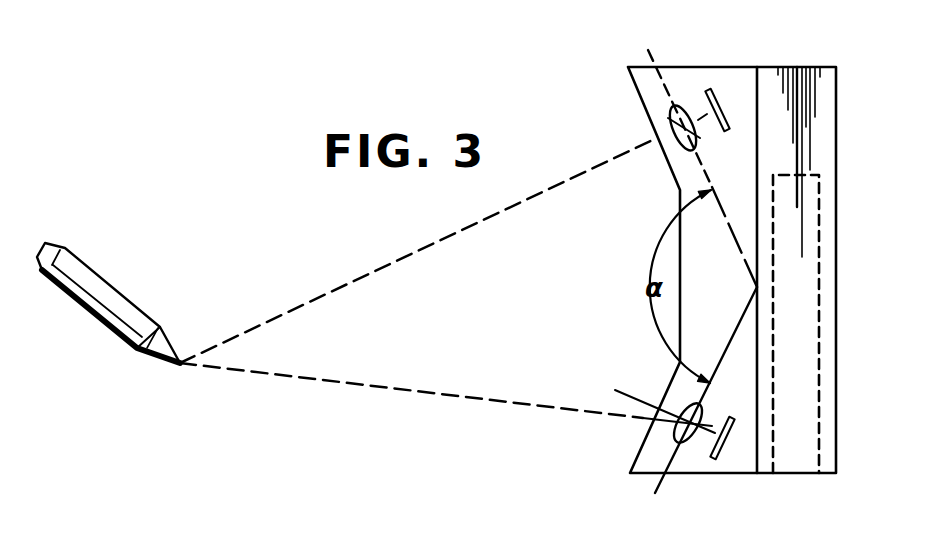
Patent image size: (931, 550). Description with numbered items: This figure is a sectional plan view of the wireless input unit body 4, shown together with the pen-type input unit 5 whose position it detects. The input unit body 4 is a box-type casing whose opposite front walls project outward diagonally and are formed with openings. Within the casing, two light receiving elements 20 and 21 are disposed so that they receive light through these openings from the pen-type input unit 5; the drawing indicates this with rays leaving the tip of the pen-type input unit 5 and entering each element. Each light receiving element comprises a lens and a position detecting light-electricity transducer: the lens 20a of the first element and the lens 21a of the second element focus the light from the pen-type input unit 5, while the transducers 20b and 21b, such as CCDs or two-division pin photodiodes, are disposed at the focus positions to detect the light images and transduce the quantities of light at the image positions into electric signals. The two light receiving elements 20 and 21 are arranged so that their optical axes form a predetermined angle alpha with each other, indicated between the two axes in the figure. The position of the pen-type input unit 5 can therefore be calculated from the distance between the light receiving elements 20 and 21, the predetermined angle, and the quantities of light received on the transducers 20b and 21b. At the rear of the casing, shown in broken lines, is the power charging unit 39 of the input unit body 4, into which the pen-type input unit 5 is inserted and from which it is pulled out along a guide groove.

The input unit body 4 is at (693, 48).
The pen-type input unit 5 is at (122, 302).
The light receiving element 20 is at (628, 66).
The lens 20a is at (652, 125).
The position detecting light-electricity transducer 20b is at (722, 90).
The light receiving element 21 is at (647, 480).
The lens 21a is at (676, 428).
The position detecting light-electricity transducer 21b is at (728, 450).
The power charging unit 39 is at (812, 284).